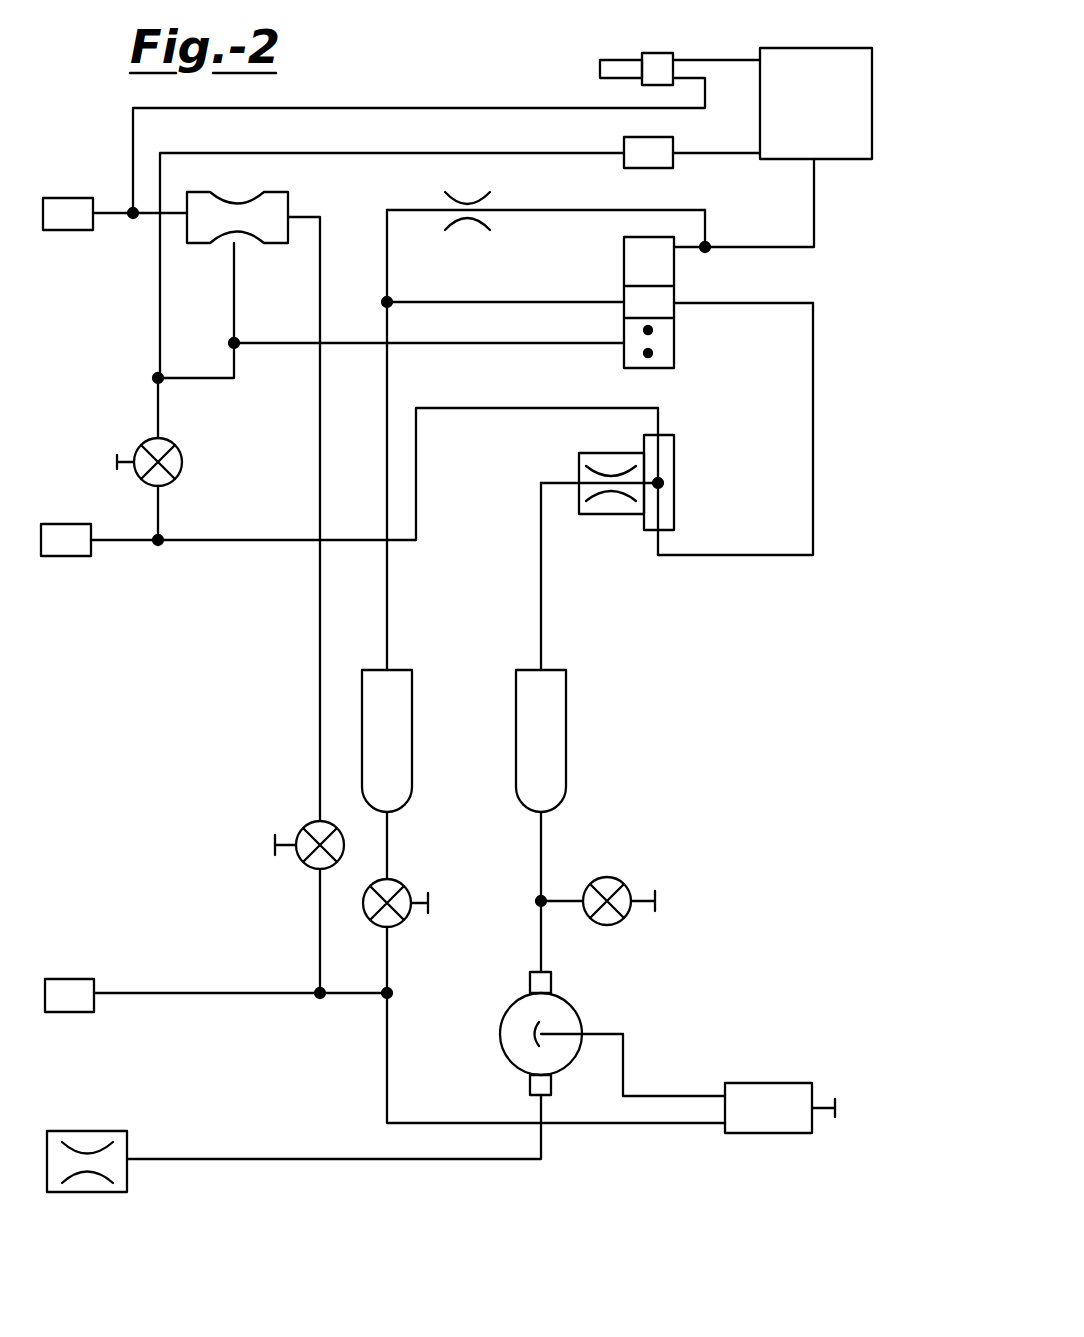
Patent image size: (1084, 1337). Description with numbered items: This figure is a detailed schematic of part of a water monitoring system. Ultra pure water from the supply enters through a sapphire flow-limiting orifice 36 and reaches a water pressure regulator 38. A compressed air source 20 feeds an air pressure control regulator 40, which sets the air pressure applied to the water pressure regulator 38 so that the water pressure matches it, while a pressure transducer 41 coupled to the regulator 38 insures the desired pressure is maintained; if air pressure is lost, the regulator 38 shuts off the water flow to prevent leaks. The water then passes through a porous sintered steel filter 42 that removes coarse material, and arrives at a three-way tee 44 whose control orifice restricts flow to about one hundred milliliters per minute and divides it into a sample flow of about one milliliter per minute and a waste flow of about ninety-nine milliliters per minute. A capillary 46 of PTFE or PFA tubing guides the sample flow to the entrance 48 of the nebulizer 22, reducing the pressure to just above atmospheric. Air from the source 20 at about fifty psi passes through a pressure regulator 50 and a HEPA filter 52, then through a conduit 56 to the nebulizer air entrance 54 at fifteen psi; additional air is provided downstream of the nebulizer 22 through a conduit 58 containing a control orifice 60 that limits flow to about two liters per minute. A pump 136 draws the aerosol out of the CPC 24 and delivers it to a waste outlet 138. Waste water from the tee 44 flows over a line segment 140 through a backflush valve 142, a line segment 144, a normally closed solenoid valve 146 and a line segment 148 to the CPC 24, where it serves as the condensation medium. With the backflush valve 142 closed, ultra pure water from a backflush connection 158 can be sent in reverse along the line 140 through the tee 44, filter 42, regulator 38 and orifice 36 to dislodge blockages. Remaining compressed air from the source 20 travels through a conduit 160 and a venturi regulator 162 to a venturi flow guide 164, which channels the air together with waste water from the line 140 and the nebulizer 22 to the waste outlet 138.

The compressed air source 20 is at (75, 978).
The nebulizer 22 is at (677, 270).
The CPC 24 is at (800, 47).
The sapphire flow-limiting orifice 36 is at (100, 1130).
The water pressure regulator 38 is at (568, 1000).
The air pressure control regulator 40 is at (762, 1084).
The pressure transducer 41 is at (605, 878).
The sintered steel filter 42 is at (567, 790).
The 3-way tee 44 is at (597, 452).
The capillary 46 is at (814, 393).
The nebulizer entrance 48 is at (677, 305).
The pressure regulator 50 is at (398, 882).
The HEPA filter 52 is at (415, 790).
The nebulizer air entrance 54 is at (622, 311).
The conduit 56 is at (462, 302).
The conduit 58 is at (540, 210).
The control orifice 60 is at (470, 218).
The pump 136 is at (665, 52).
The waste outlet 138 is at (66, 198).
The line segment 140 is at (512, 408).
The backflush valve 142 is at (182, 478).
The line segment 144 is at (315, 150).
The solenoid valve 146 is at (645, 170).
The line segment 148 is at (705, 155).
The backflush connection 158 is at (62, 557).
The conduit 160 is at (320, 942).
The venturi regulator 162 is at (298, 828).
The venturi flow guide 164 is at (258, 244).